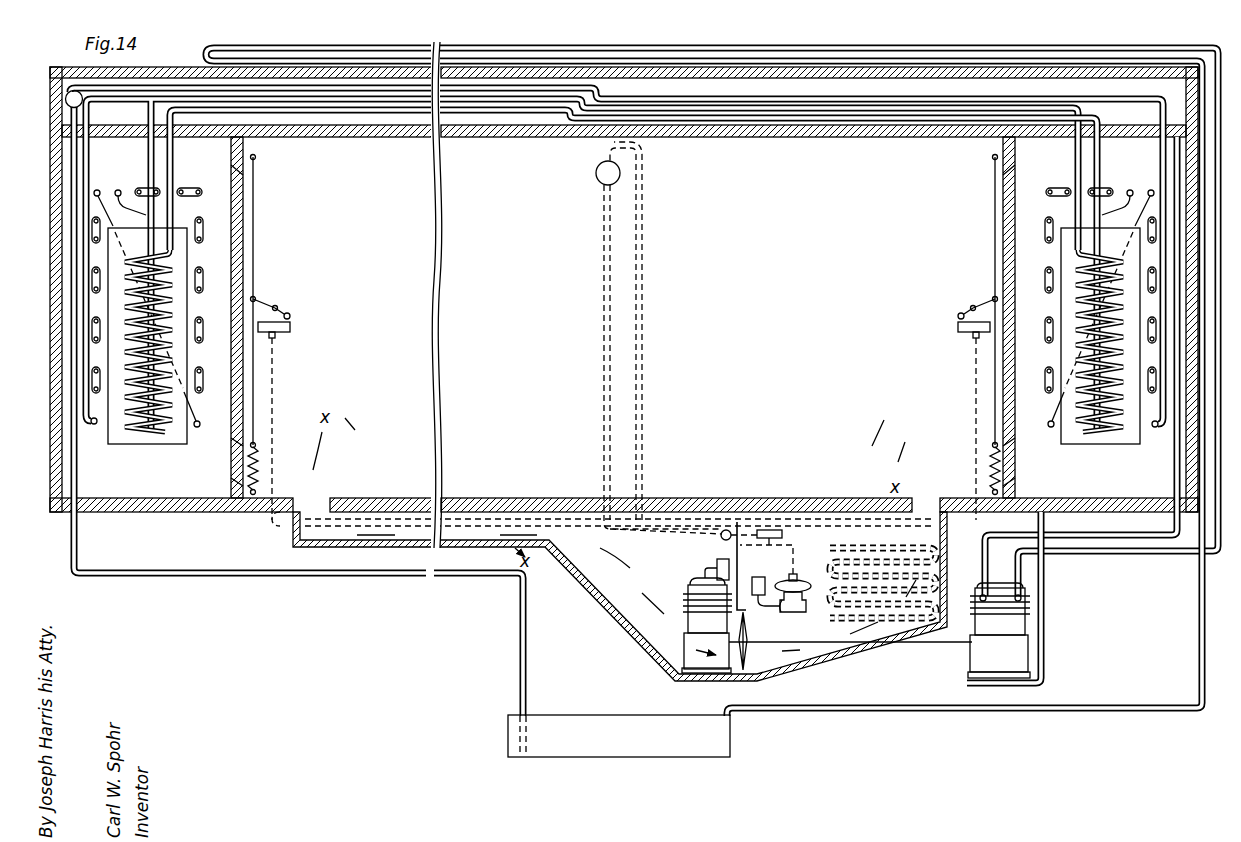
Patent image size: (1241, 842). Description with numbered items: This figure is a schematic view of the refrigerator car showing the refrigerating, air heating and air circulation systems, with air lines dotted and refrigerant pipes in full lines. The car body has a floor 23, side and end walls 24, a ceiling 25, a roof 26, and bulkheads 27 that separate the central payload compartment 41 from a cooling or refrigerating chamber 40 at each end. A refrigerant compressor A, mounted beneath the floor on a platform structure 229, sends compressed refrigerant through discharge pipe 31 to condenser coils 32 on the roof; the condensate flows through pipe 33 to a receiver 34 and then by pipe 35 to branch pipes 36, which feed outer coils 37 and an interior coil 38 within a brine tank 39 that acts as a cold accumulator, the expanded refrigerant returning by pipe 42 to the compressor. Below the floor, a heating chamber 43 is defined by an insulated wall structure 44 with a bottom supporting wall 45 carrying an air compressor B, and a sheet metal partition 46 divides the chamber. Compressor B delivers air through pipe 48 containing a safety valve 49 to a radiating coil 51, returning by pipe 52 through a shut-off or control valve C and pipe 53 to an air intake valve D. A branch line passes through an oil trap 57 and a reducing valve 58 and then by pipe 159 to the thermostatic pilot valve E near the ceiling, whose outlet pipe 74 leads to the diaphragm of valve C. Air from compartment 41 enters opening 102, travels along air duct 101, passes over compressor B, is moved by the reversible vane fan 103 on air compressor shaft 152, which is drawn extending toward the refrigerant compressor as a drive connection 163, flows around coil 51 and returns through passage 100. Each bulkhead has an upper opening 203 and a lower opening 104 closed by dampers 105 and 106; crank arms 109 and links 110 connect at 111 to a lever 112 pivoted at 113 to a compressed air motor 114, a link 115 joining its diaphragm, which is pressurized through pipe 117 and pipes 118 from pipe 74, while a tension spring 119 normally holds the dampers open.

The floor 23 is at (866, 493).
The side and end walls 24 is at (1189, 103).
The ceiling 25 is at (516, 138).
The roof 26 is at (200, 67).
The bulkhead 27 is at (231, 250).
The discharge pipe 31 is at (1130, 556).
The condenser coils 32 is at (956, 56).
The pipe 33 is at (1182, 679).
The receiver 34 is at (634, 745).
The pipe 35 is at (436, 578).
The branch pipes 36 is at (634, 100).
The outer coils 37 is at (94, 426).
The interior coil 38 is at (142, 412).
The brine tank 39 is at (147, 445).
The cooling or refrigerating chamber 40 is at (624, 269).
The payload compartment 41 is at (516, 186).
The pipe 42 is at (430, 110).
The heating chamber 43 is at (648, 636).
The insulated wall structure 44 is at (668, 668).
The bottom supporting wall 45 is at (722, 680).
The sheet metal partition 46 is at (735, 543).
The pipe 48 is at (688, 584).
The safety valve 49 is at (715, 566).
The radiating coil 51 is at (830, 590).
The pipe 52 is at (803, 612).
The pipe 53 is at (780, 610).
The oil trap 57 is at (769, 529).
The reducing valve 58 is at (720, 538).
The pipe 74 is at (643, 325).
The passage 100 is at (930, 530).
The air duct 101 is at (437, 553).
The opening 102 is at (308, 512).
The reversible vane fan 103 is at (748, 654).
The lower opening 104 is at (231, 482).
The upper damper 105 is at (231, 172).
The lower damper 106 is at (231, 442).
The crank arm 109 is at (256, 156).
The links 110 is at (256, 212).
The connection 111 is at (255, 297).
The lever 112 is at (272, 304).
The pivot 113 is at (291, 316).
The compressed air motor 114 is at (290, 330).
The link 115 is at (279, 309).
The pipe 117 is at (276, 376).
The pipes 118 is at (470, 514).
The tension spring 119 is at (258, 470).
The air compressor shaft 152 is at (792, 641).
The pipe 159 is at (604, 304).
The shaft 163 is at (956, 644).
The upper opening 203 is at (248, 138).
The platform structure 229 is at (1045, 658).
The refrigerant compressor A is at (999, 630).
The air compressor B is at (686, 626).
The shut-off or control valve C is at (797, 593).
The air intake valve D is at (762, 579).
The thermostatic pilot valve E is at (596, 175).